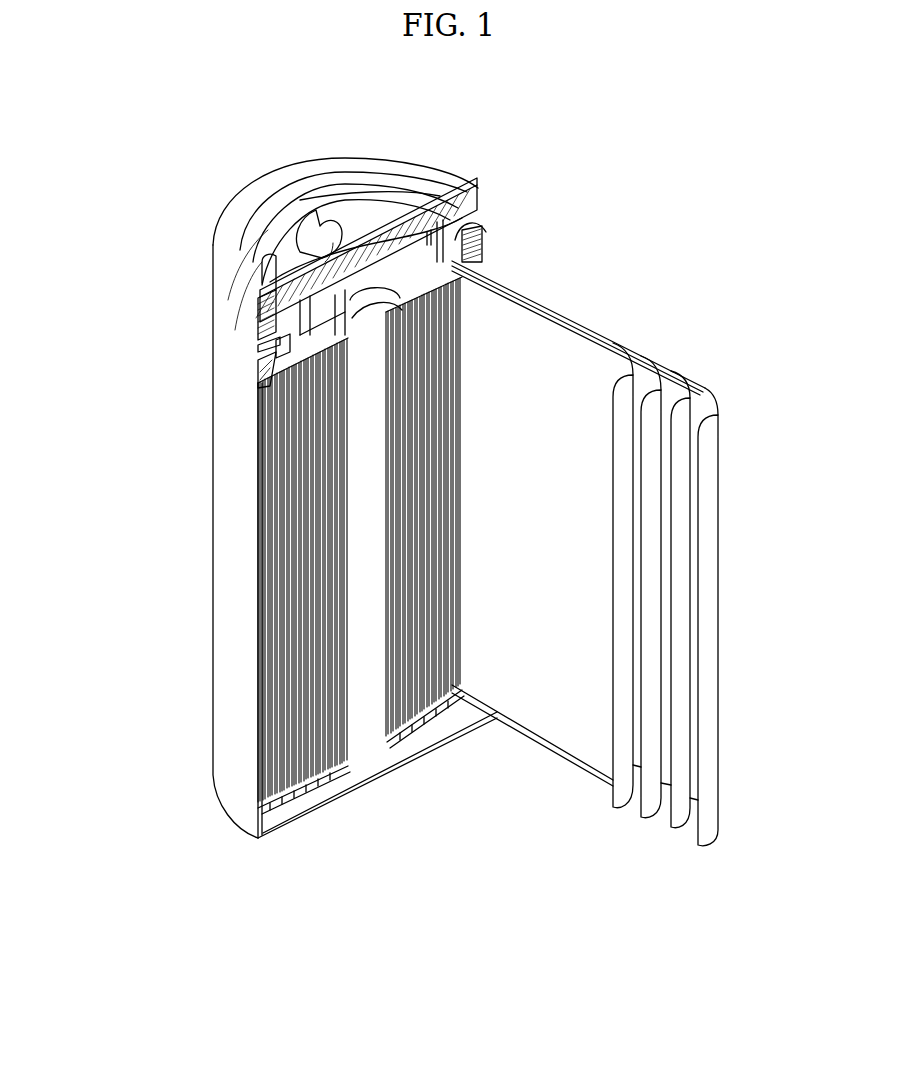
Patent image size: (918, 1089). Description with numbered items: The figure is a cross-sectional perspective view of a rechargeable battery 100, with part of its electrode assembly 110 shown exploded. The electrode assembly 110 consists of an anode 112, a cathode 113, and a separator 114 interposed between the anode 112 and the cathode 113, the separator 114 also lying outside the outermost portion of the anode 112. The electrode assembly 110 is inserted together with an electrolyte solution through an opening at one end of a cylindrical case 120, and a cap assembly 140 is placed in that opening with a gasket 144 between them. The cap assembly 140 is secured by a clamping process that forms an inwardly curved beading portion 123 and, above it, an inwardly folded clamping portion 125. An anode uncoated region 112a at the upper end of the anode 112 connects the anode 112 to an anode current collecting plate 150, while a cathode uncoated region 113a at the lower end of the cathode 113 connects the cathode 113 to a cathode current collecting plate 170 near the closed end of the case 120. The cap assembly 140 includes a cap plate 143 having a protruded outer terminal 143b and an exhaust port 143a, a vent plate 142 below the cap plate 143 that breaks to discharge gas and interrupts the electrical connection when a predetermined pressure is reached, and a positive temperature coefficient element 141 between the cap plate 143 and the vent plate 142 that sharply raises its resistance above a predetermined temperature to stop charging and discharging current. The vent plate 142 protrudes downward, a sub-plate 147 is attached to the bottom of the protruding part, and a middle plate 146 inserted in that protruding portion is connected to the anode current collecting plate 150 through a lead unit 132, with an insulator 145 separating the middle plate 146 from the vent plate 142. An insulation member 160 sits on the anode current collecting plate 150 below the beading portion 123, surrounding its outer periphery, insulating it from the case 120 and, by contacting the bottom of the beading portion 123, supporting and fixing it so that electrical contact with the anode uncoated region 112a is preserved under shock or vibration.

The rechargeable battery 100 is at (371, 97).
The electrode assembly 110 is at (376, 716).
The anode 112 is at (677, 830).
The anode uncoated region 112a is at (667, 384).
The cathode 113 is at (613, 792).
The cathode uncoated region 113a is at (633, 788).
The separator 114 is at (650, 803).
The case 120 is at (214, 437).
The beading portion 123 is at (270, 357).
The clamping portion 125 is at (258, 315).
The lead unit 132 is at (272, 349).
The cap assembly 140 is at (371, 227).
The positive temperature coefficient element 141 is at (470, 213).
The vent plate 142 is at (467, 223).
The cap plate 143 is at (423, 195).
The exhaust port 143a is at (300, 240).
The protruded outer terminal 143b is at (333, 210).
The gasket 144 is at (453, 233).
The insulator 145 is at (457, 243).
The middle plate 146 is at (473, 242).
The sub-plate 147 is at (508, 249).
The anode current collecting plate 150 is at (470, 265).
The insulation member 160 is at (262, 371).
The cathode current collecting plate 170 is at (313, 782).